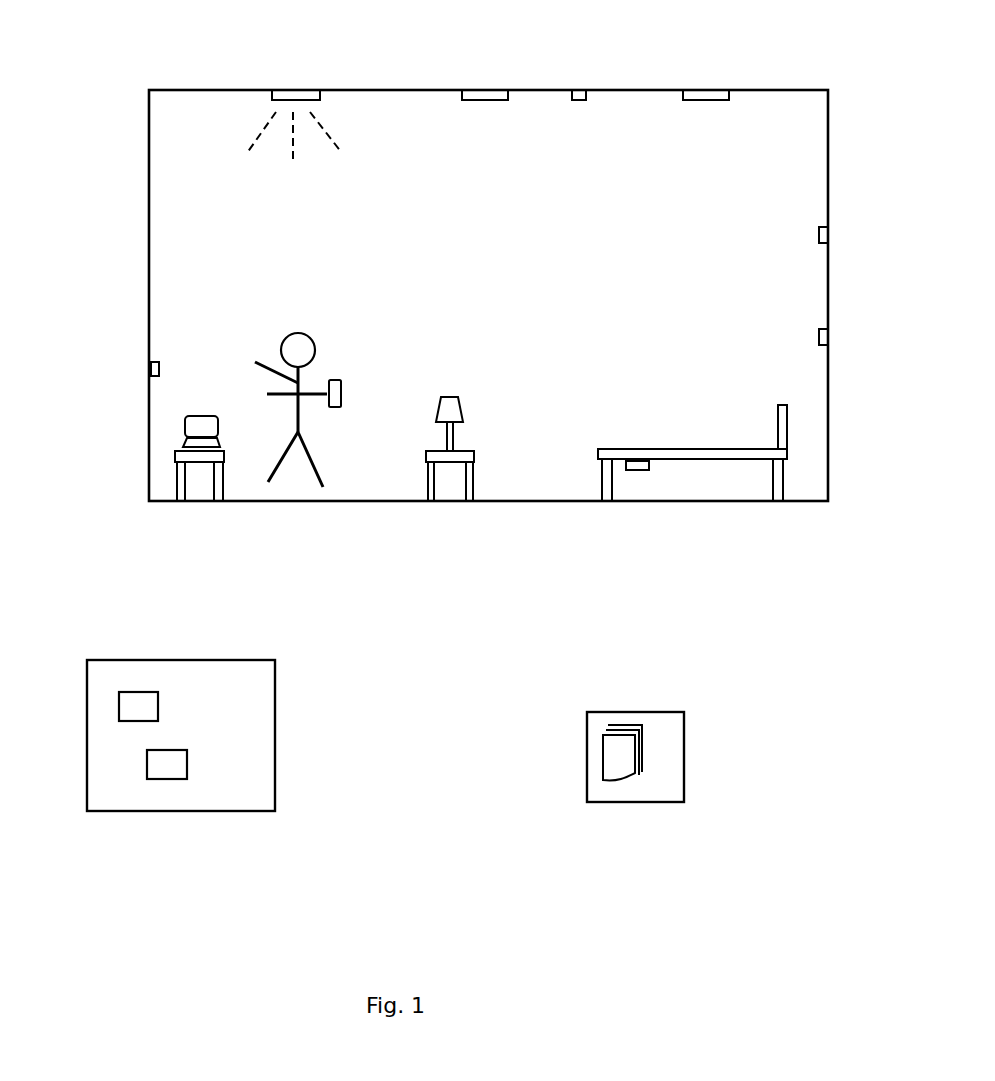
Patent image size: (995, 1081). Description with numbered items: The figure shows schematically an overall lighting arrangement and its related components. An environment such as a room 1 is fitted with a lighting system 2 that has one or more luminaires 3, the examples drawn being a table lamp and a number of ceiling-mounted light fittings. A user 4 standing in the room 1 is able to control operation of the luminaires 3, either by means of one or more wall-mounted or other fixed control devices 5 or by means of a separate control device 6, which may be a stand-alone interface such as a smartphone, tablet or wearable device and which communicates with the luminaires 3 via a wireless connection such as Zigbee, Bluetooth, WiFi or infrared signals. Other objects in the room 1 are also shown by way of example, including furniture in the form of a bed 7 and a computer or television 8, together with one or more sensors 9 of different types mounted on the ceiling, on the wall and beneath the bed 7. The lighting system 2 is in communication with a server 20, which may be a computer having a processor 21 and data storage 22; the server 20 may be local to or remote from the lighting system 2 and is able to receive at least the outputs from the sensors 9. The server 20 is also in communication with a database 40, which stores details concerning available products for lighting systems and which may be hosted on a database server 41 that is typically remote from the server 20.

The room 1 is at (149, 204).
The lighting system 2 is at (112, 272).
The luminaires 3 is at (285, 88).
The user 4 is at (255, 362).
The fixed control devices 5 is at (159, 370).
The control device 6 is at (333, 378).
The bed 7 is at (732, 448).
The computer or television 8 is at (177, 427).
The sensors 9 is at (578, 88).
The server 20 is at (276, 735).
The processor 21 is at (118, 711).
The data storage 22 is at (147, 765).
The database 40 is at (603, 758).
The database server 41 is at (684, 762).